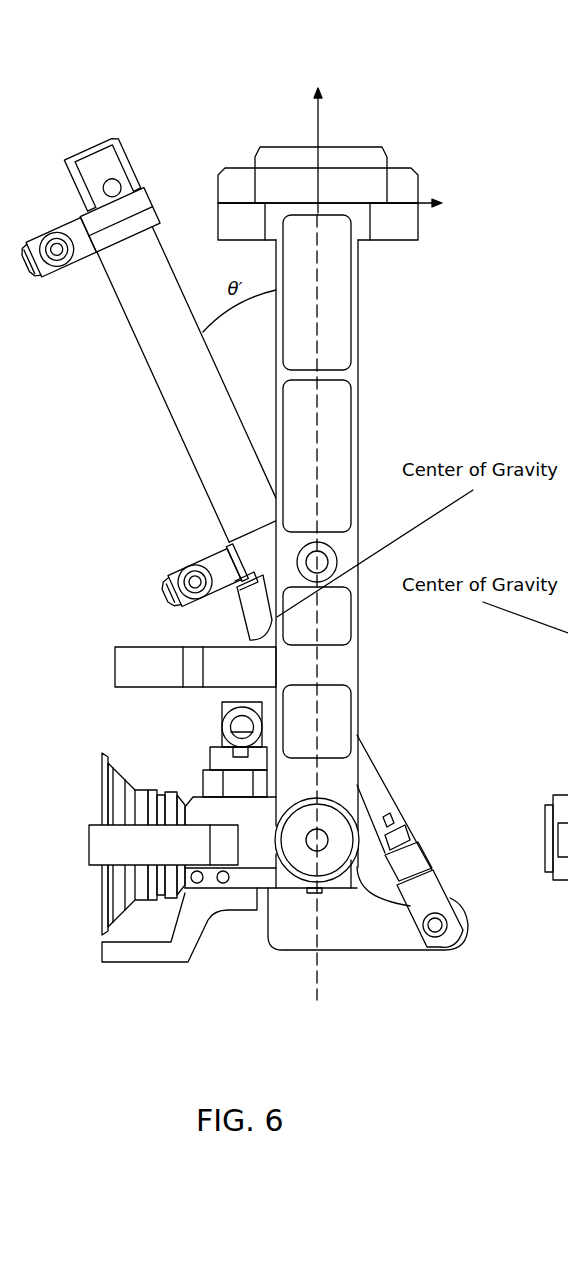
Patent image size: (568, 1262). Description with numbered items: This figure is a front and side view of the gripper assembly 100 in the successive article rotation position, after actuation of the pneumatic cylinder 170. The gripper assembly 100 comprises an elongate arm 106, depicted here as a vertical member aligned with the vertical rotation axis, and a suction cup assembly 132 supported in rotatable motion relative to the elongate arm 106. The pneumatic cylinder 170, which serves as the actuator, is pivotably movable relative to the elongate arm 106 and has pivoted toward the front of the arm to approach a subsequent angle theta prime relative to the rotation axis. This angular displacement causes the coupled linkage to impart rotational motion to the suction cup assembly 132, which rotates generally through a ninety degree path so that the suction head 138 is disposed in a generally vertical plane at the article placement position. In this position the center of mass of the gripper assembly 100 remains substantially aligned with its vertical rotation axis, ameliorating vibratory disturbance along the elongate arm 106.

The gripper assembly 100 is at (280, 69).
The elongate arm 106 is at (335, 272).
The pneumatic cylinder 170 is at (150, 318).
The suction head 138 is at (97, 888).
The suction cup assembly 132 is at (78, 965).